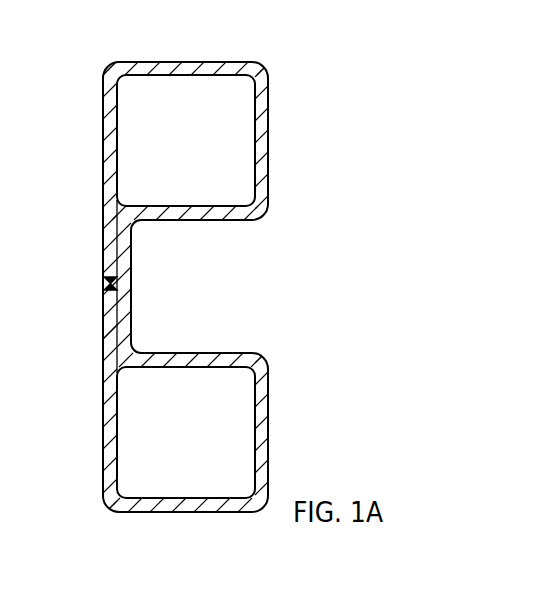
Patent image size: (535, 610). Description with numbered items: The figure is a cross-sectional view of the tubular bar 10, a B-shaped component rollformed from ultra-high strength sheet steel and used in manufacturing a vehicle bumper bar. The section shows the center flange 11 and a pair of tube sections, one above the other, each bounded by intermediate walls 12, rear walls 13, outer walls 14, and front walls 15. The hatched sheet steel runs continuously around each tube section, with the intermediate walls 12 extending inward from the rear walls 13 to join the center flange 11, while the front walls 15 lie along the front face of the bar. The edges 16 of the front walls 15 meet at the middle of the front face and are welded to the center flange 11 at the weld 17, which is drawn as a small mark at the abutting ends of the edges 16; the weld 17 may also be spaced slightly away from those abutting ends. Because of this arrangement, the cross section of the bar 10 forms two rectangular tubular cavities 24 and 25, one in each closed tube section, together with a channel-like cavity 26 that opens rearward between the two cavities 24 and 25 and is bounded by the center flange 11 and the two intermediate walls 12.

The tubular bar 10 is at (91, 45).
The center flange 11 is at (122, 275).
The intermediate walls 12 is at (203, 220).
The rear walls 13 is at (262, 113).
The outer walls 14 is at (210, 62).
The front walls 15 is at (103, 125).
The edges 16 is at (112, 262).
The weld 17 is at (107, 287).
The rectangular tubular cavity 24 is at (204, 443).
The rectangular tubular cavity 25 is at (205, 146).
The channel-like cavity 26 is at (193, 321).